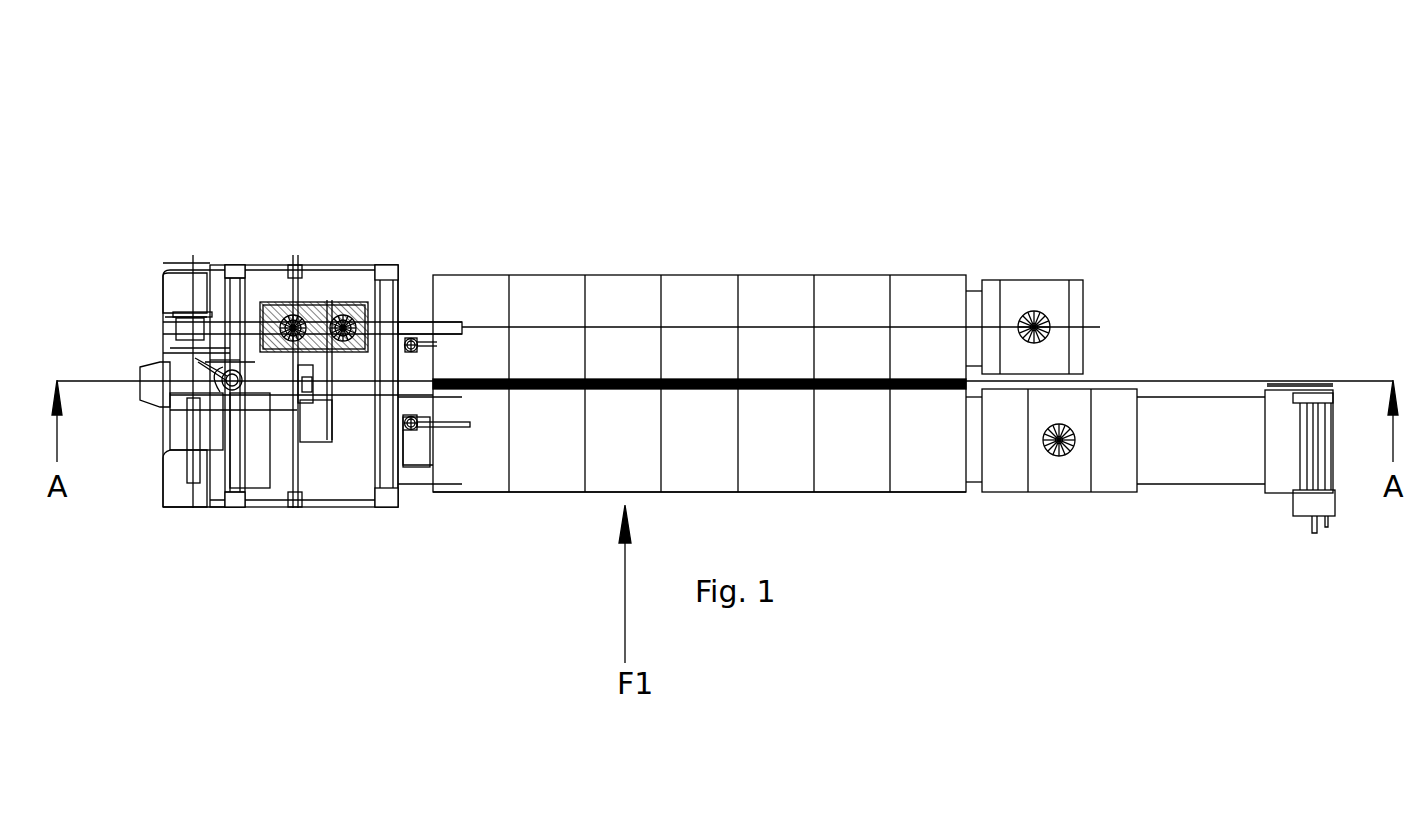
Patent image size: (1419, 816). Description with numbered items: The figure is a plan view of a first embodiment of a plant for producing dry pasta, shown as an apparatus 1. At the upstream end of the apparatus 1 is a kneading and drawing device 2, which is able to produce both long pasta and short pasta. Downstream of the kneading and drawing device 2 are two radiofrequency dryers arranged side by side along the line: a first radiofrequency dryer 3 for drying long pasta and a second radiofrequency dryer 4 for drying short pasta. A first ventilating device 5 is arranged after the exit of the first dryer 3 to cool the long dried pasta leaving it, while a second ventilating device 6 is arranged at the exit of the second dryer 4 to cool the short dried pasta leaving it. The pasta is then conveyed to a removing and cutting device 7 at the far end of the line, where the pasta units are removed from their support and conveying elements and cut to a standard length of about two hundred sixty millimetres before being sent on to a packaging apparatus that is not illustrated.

The apparatus 1 is at (733, 175).
The kneading and drawing device 2 is at (260, 205).
The first radiofrequency dryer 3 is at (586, 490).
The second radiofrequency dryer 4 is at (620, 277).
The first ventilating device 5 is at (1000, 457).
The second ventilating device 6 is at (1010, 305).
The removing and cutting device 7 is at (1306, 500).